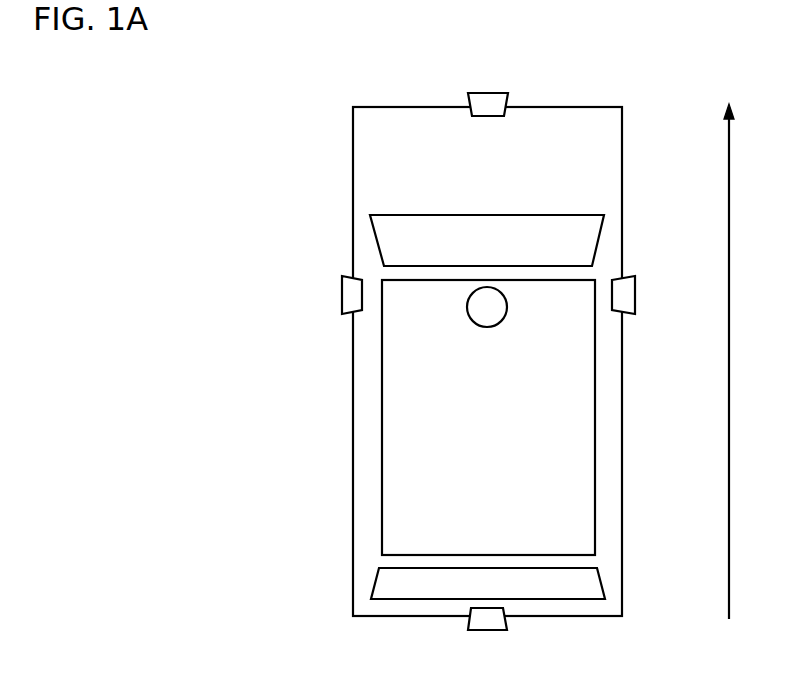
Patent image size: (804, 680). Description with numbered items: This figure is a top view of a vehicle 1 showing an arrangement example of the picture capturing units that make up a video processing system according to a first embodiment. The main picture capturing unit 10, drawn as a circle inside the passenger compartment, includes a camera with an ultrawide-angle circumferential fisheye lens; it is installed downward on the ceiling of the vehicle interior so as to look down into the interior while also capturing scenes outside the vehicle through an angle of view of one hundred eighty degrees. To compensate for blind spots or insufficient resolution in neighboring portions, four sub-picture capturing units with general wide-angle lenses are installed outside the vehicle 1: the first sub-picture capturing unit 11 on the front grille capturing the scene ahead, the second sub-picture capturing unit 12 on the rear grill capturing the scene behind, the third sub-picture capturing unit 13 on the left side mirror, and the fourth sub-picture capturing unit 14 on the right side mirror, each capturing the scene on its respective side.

The vehicle 1 is at (597, 107).
The main picture capturing unit 10 is at (468, 318).
The first sub-picture capturing unit 11 is at (492, 93).
The second sub-picture capturing unit 12 is at (487, 632).
The third sub-picture capturing unit 13 is at (342, 285).
The fourth sub-picture capturing unit 14 is at (636, 283).